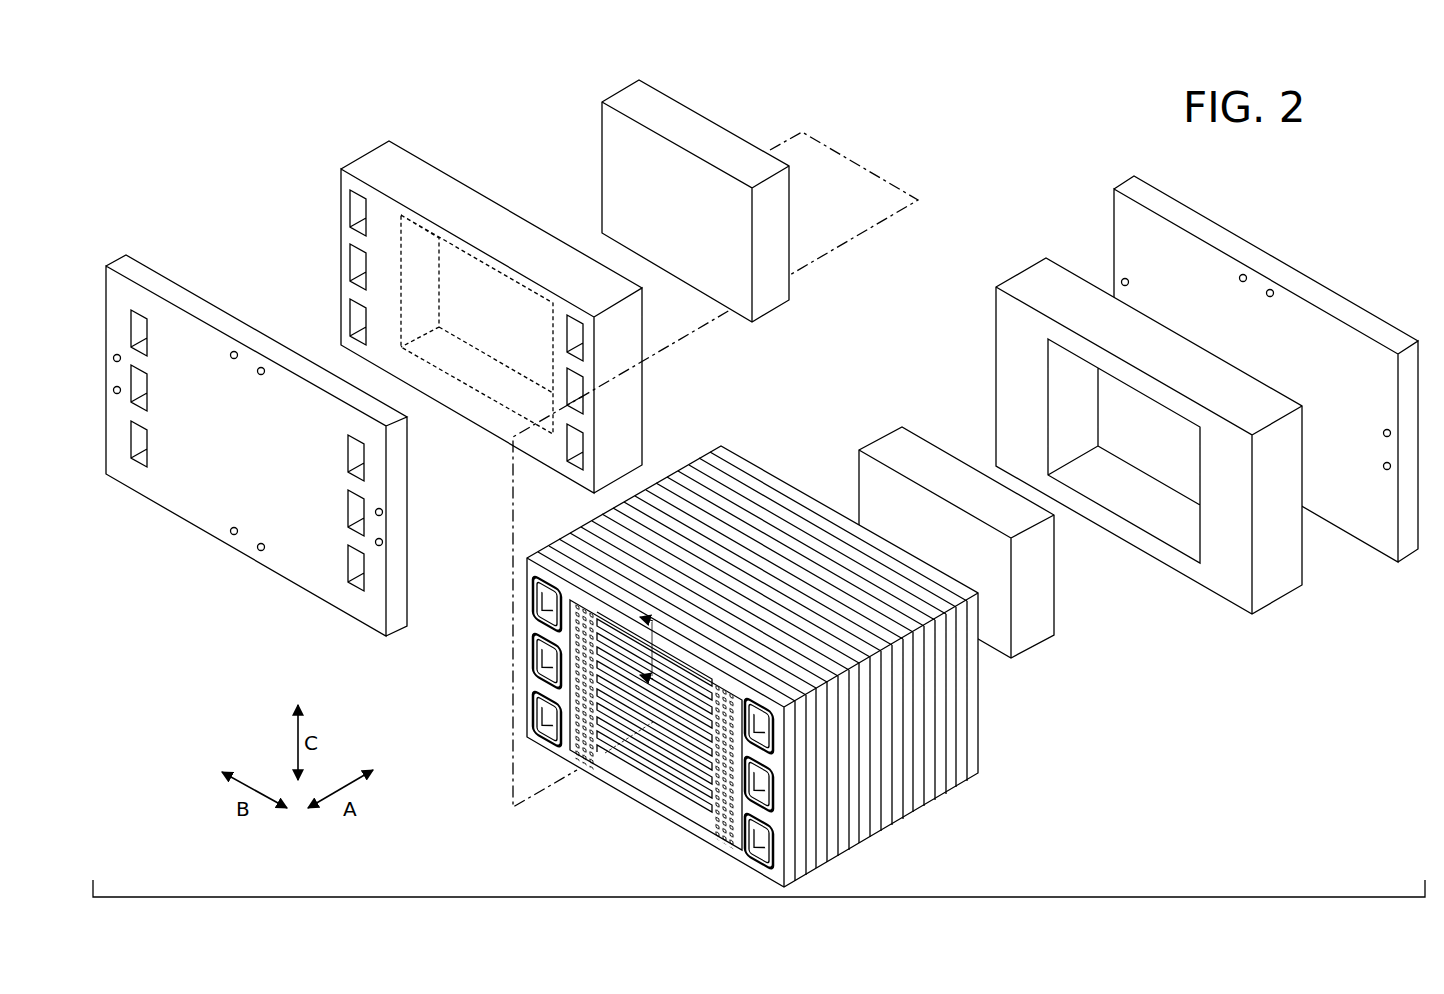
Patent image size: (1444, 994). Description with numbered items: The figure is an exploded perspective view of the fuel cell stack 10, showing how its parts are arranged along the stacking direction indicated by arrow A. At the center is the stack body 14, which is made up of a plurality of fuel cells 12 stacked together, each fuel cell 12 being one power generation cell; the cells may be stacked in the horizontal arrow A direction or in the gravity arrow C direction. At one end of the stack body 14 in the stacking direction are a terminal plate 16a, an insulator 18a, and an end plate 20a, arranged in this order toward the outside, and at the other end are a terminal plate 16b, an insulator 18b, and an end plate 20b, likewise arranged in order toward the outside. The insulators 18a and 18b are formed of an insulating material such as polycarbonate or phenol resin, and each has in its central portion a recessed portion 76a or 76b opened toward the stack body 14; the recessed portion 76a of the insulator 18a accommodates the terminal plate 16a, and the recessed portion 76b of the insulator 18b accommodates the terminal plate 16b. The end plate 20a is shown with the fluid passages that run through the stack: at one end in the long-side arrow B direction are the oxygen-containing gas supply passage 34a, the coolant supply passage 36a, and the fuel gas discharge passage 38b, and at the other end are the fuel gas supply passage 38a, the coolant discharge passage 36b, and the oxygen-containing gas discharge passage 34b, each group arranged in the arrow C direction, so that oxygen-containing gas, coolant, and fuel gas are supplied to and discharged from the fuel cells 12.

The fuel cell stack 10 is at (1366, 164).
The fuel cell 12 is at (946, 795).
The stack body 14 is at (774, 666).
The terminal plate 16a is at (613, 98).
The terminal plate 16b is at (903, 437).
The insulator 18a is at (387, 140).
The insulator 18b is at (1030, 284).
The end plate 20a is at (125, 256).
The end plate 20b is at (1117, 186).
The oxygen-containing gas supply passage 34a is at (348, 452).
The oxygen-containing gas discharge passage 34b is at (147, 443).
The coolant supply passage 36a is at (348, 508).
The coolant discharge passage 36b is at (147, 387).
The fuel gas supply passage 38a is at (147, 332).
The fuel gas discharge passage 38b is at (348, 563).
The recessed portion 76a is at (421, 260).
The recessed portion 76b is at (1163, 528).